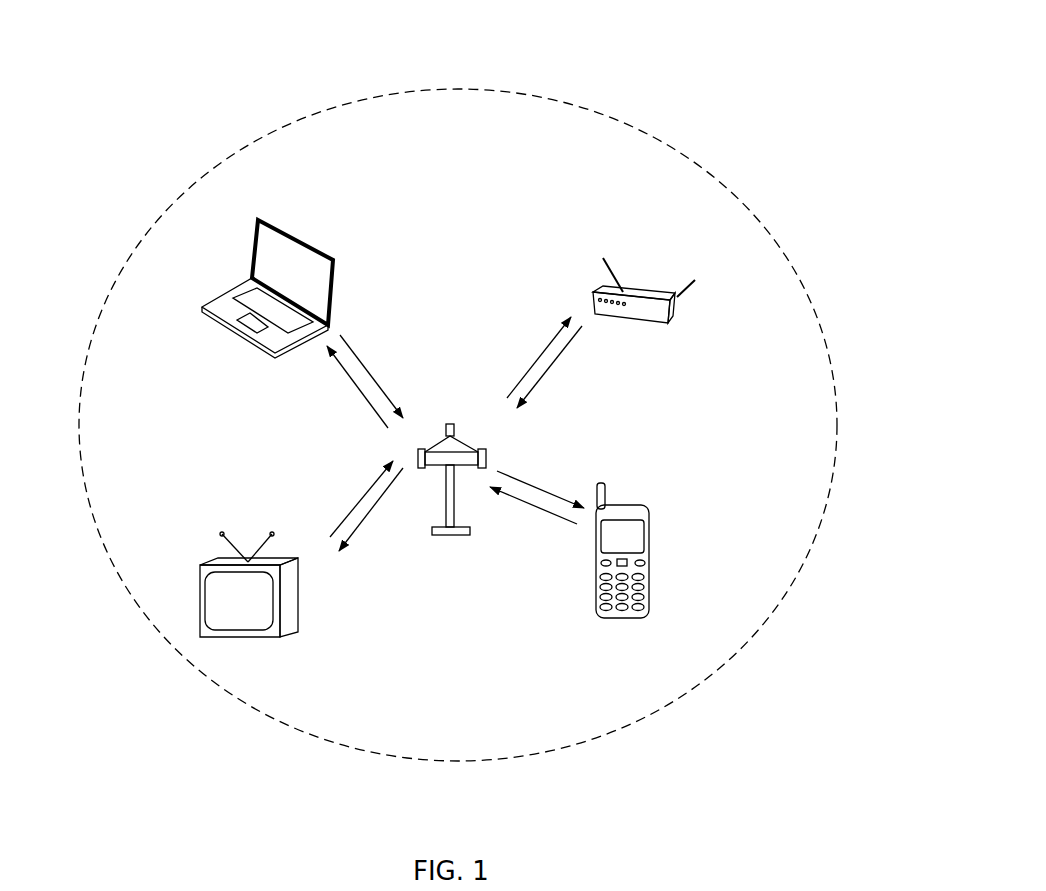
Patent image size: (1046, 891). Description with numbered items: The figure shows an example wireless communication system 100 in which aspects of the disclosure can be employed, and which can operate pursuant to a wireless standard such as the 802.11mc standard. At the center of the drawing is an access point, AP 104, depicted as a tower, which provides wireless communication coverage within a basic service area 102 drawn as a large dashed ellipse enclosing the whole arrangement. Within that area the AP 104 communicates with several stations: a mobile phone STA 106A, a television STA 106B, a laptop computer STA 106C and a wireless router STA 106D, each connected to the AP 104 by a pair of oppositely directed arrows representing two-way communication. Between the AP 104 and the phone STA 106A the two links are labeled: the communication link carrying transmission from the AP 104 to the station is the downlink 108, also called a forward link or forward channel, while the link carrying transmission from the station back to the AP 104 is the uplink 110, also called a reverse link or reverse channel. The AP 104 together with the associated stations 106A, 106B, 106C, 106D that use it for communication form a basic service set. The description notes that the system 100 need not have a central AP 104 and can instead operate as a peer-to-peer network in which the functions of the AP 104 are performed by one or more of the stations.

The wireless communication system 100 is at (741, 41).
The basic service area 102 is at (787, 240).
The AP 104 is at (450, 424).
The STA 106A is at (624, 504).
The STA 106B is at (297, 557).
The STA 106C is at (268, 217).
The STA 106D is at (656, 290).
The downlink 108 is at (528, 477).
The uplink 110 is at (490, 503).